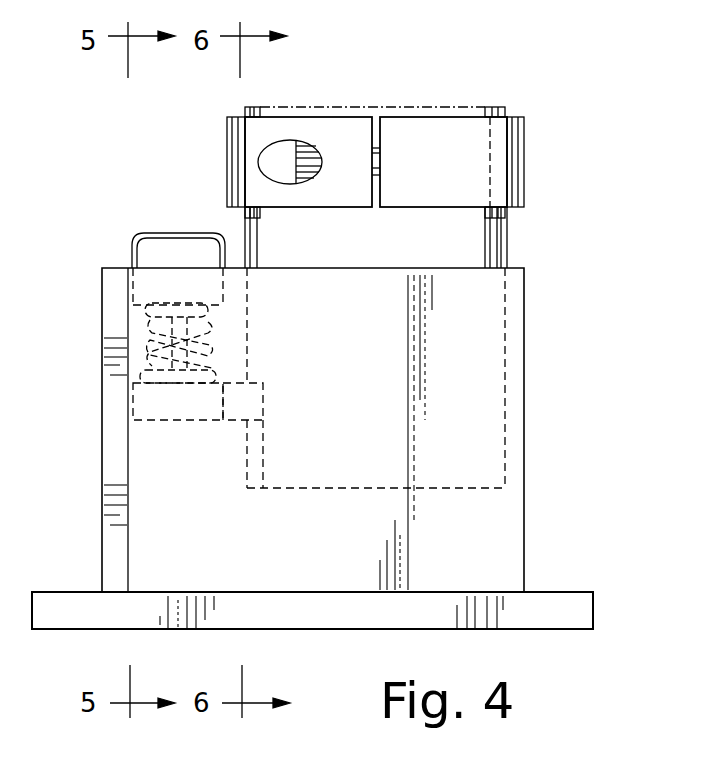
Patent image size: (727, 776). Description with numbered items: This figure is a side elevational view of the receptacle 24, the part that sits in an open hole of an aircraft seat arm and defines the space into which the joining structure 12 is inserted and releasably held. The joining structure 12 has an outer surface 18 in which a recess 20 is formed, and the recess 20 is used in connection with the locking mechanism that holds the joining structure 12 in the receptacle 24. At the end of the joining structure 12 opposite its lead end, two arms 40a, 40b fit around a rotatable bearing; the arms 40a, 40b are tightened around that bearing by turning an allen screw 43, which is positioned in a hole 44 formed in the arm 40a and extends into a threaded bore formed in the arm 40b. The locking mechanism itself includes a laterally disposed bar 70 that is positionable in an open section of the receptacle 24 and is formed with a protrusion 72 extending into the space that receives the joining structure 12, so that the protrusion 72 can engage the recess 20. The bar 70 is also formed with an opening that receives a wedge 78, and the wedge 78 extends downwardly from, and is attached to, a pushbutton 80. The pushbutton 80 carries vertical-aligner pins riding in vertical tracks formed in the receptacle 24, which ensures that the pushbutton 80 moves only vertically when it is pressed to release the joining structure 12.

The joining structure 12 is at (532, 227).
The outer surface 18 is at (475, 258).
The recess 20 is at (250, 482).
The receptacle 24 is at (548, 392).
The arm 40a is at (228, 138).
The arm 40b is at (599, 146).
The allen screw 43 is at (378, 160).
The hole 44 is at (277, 164).
The bar 70 is at (155, 420).
The protrusion 72 is at (235, 422).
The wedge 78 is at (190, 332).
The pushbutton 80 is at (180, 233).